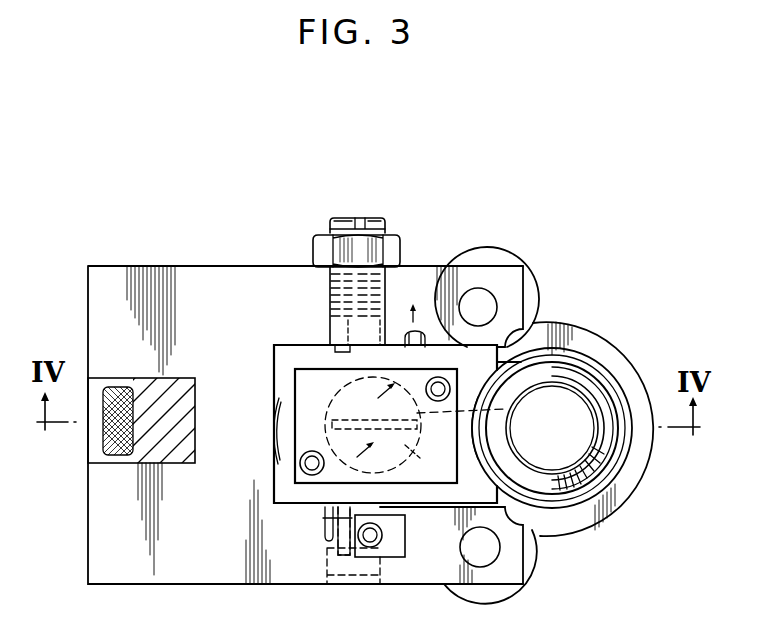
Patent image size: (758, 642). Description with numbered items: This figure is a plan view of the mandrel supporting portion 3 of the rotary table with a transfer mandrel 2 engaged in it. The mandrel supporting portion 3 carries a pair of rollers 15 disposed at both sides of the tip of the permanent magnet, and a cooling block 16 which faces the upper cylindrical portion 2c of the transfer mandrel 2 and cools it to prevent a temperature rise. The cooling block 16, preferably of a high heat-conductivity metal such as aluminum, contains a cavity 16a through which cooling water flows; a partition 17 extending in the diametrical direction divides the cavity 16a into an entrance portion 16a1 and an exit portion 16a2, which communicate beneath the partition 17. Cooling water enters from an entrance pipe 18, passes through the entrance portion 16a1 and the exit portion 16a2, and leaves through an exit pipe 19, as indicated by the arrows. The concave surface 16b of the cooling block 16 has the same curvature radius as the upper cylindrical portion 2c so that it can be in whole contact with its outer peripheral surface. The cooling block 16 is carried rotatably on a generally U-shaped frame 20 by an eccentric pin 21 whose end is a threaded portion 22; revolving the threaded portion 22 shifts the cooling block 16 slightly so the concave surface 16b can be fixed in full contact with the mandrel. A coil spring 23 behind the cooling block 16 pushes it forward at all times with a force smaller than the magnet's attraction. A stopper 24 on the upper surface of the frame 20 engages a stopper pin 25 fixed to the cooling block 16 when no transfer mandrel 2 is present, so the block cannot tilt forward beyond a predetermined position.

The transfer mandrel 2 is at (574, 429).
The upper cylindrical portion 2c is at (612, 383).
The mandrel supporting portion 3 is at (245, 586).
The rollers 15 is at (530, 558).
The cooling block 16 is at (433, 496).
The cavity 16a is at (347, 400).
The entrance portion 16a1 is at (426, 463).
The exit portion 16a2 is at (505, 409).
The concave surface 16b is at (470, 440).
The partition 17 is at (332, 426).
The entrance pipe 18 is at (347, 557).
The exit pipe 19 is at (418, 342).
The frame 20 is at (430, 276).
The eccentric pin 21 is at (331, 346).
The threaded portion 22 is at (370, 222).
The coil spring 23 is at (272, 432).
The stopper 24 is at (405, 545).
The stopper pin 25 is at (323, 537).